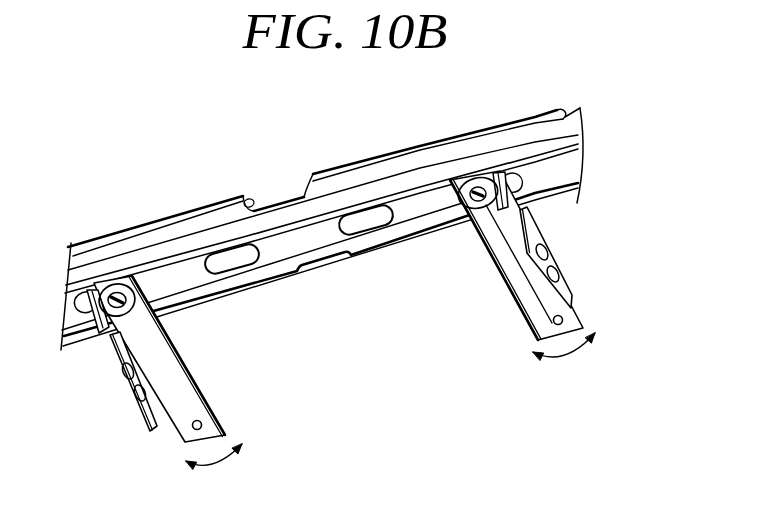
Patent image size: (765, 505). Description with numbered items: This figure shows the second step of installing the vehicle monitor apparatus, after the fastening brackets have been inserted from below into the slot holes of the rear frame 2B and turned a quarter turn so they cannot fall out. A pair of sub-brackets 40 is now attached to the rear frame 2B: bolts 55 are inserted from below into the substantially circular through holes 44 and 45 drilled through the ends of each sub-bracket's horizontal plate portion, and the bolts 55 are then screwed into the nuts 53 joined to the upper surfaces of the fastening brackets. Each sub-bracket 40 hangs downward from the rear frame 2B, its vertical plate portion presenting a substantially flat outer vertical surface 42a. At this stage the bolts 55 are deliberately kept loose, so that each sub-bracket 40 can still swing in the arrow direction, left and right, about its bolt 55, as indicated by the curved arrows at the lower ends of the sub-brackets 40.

The rear frame 2B is at (217, 201).
The sub-bracket 40 is at (215, 410).
The vertical surface 42a is at (160, 407).
The through hole 44 is at (475, 183).
The through hole 45 is at (118, 278).
The nut 53 is at (107, 281).
The bolt 55 is at (134, 303).